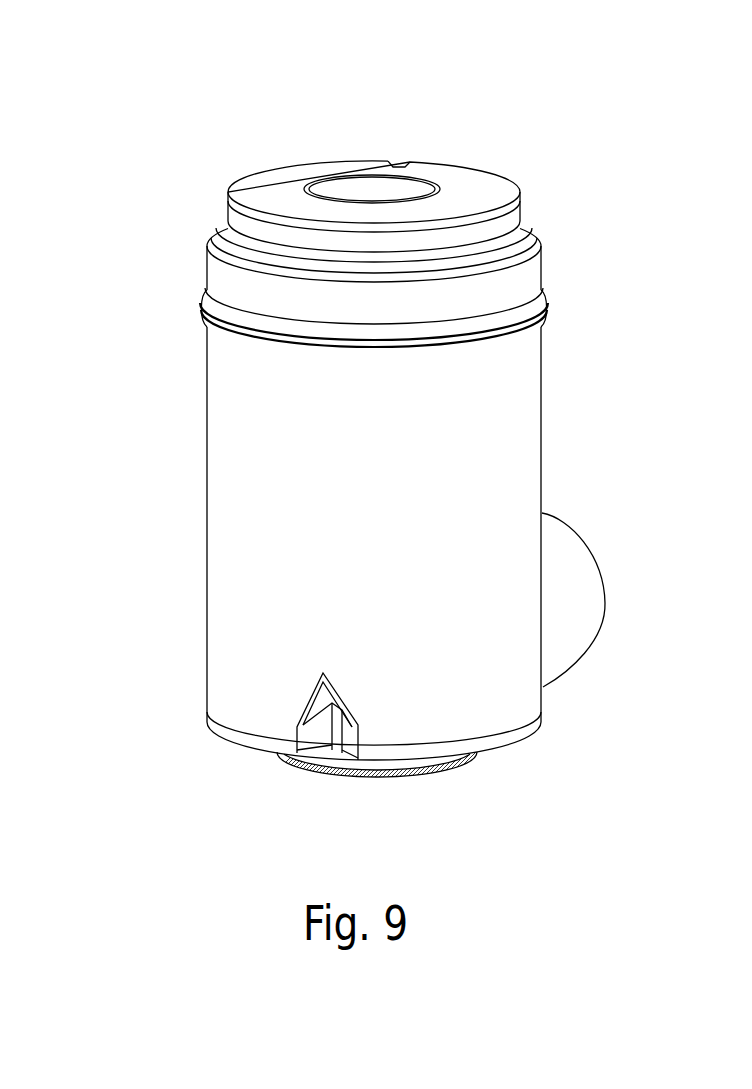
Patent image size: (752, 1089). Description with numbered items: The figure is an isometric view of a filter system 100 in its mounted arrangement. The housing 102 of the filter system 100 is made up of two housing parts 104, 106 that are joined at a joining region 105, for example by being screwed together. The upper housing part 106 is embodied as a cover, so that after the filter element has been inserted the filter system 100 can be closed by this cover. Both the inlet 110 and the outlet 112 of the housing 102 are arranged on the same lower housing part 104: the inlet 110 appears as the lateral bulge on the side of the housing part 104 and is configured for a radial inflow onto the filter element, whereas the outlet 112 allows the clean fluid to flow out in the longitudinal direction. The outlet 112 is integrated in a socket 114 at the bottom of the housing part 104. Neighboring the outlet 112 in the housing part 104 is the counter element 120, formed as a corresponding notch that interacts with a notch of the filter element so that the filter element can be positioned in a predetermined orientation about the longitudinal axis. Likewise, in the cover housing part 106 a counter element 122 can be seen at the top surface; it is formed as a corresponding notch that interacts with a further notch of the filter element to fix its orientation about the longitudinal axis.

The filter system 100 is at (512, 147).
The housing 102 is at (511, 181).
The housing part 104 is at (208, 488).
The joining region 105 is at (213, 322).
The housing part 106 is at (212, 278).
The inlet 110 is at (588, 548).
The outlet 112 is at (390, 782).
The socket 114 is at (470, 760).
The counter element 120 is at (326, 736).
The counter element 122 is at (430, 153).